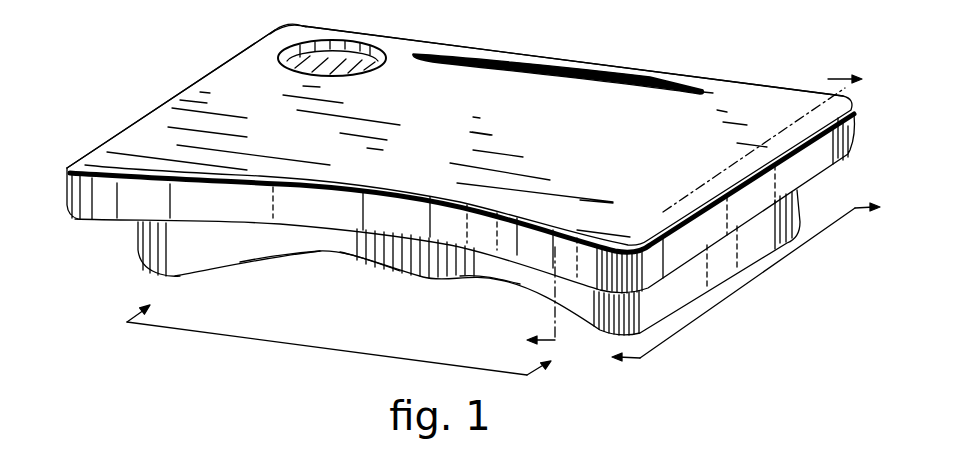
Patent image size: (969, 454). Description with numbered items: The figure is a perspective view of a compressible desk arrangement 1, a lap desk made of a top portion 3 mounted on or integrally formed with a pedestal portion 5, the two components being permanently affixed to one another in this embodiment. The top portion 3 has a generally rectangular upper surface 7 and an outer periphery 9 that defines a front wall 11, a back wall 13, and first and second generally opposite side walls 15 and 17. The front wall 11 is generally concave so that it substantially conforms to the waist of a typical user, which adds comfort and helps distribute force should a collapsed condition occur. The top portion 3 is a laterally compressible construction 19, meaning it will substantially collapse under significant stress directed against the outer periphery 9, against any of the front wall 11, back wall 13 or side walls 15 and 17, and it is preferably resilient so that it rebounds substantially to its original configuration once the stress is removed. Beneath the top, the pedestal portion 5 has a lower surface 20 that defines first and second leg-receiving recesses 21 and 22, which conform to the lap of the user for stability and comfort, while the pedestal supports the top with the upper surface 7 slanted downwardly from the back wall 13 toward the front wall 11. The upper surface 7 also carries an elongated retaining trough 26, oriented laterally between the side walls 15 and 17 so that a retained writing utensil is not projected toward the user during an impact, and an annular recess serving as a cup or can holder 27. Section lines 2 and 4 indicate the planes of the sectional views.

The desk arrangement 1 is at (228, 62).
The section line 2- 2 is at (329, 355).
The top portion 3 is at (68, 196).
The section line 4- 4 is at (702, 214).
The pedestal portion 5 is at (143, 258).
The upper surface 7 is at (262, 54).
The outer periphery 9 is at (108, 208).
The front wall 11 is at (347, 208).
The back wall 13 is at (643, 70).
The first side wall 15 is at (155, 112).
The second side wall 17 is at (823, 143).
The laterally compressible construction 19 is at (713, 93).
The lower surface 20 is at (390, 267).
The first leg-receiving recess 21 is at (283, 255).
The second leg-receiving recess 22 is at (503, 280).
The elongated retaining trough 26 is at (462, 62).
The cup or can holder 27 is at (310, 48).